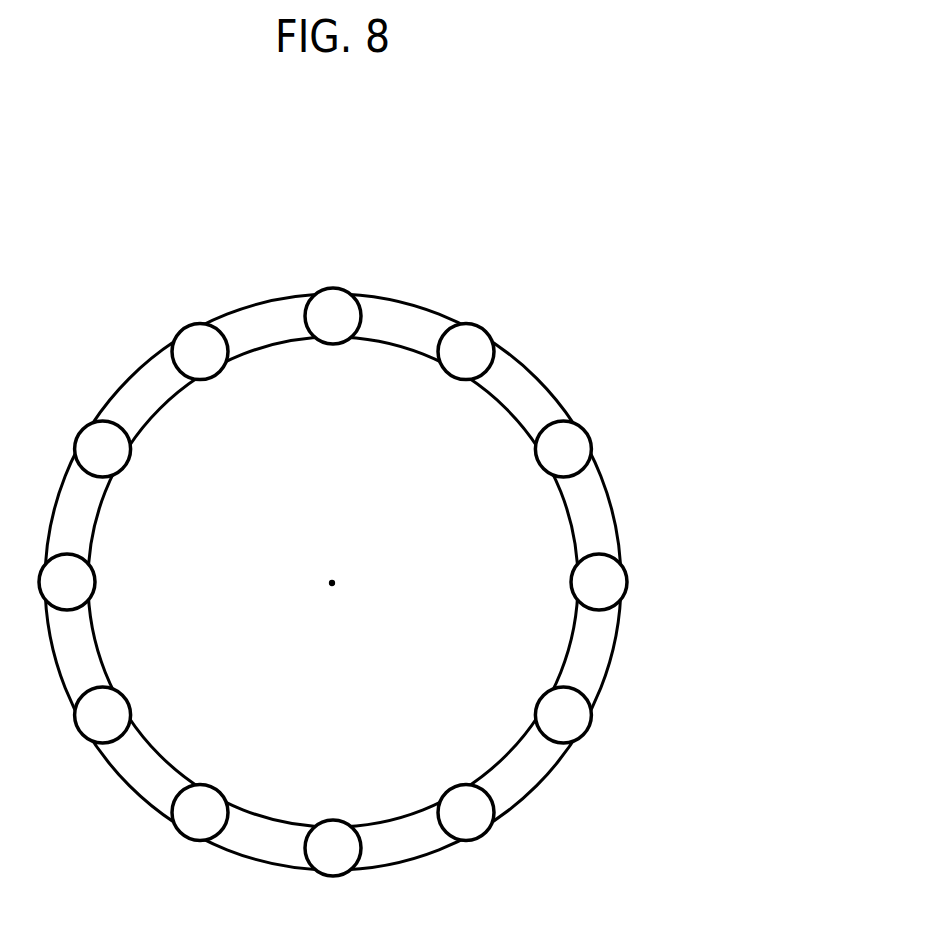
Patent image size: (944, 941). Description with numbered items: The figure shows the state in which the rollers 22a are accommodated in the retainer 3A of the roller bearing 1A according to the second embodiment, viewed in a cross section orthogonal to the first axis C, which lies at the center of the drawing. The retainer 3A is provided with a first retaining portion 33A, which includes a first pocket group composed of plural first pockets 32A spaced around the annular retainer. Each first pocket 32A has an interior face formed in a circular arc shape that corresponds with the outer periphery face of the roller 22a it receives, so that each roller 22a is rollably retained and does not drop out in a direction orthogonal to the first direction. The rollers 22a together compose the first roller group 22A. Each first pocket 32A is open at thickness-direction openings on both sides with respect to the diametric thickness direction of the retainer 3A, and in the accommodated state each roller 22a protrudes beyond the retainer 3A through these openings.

The roller bearing 1A is at (625, 157).
The retainer 3A is at (493, 192).
The first retaining portion 33A is at (327, 168).
The first pocket 32A is at (312, 297).
The first roller group 22A is at (321, 470).
The roller 22a is at (332, 333).
The first axis C is at (336, 583).